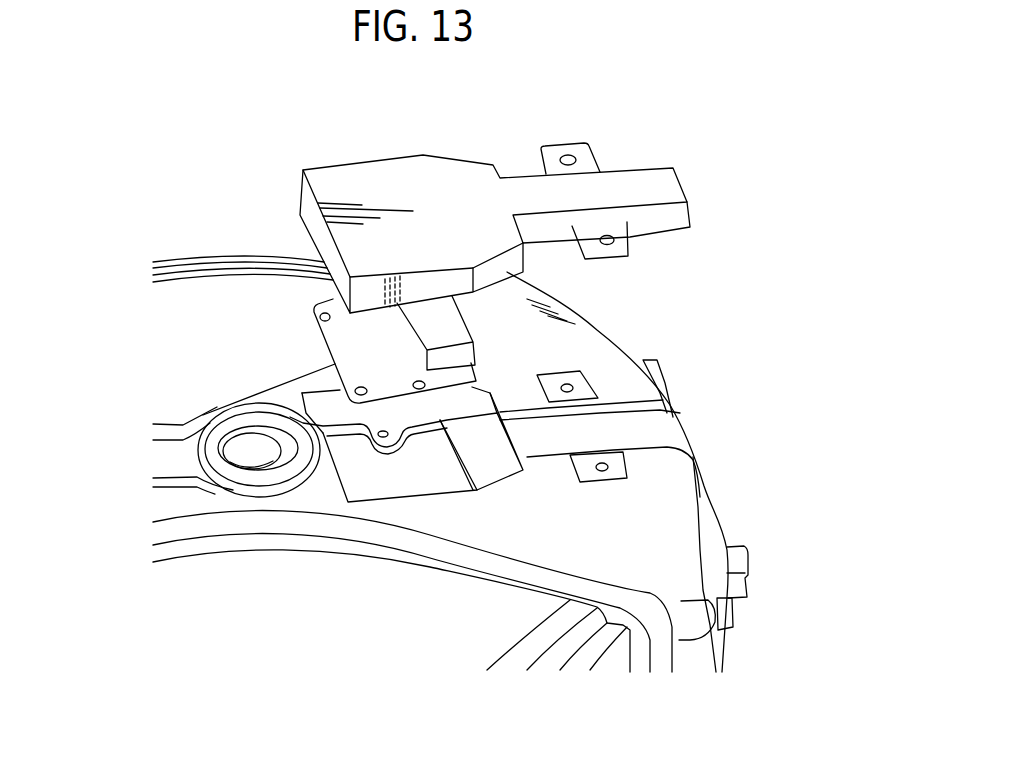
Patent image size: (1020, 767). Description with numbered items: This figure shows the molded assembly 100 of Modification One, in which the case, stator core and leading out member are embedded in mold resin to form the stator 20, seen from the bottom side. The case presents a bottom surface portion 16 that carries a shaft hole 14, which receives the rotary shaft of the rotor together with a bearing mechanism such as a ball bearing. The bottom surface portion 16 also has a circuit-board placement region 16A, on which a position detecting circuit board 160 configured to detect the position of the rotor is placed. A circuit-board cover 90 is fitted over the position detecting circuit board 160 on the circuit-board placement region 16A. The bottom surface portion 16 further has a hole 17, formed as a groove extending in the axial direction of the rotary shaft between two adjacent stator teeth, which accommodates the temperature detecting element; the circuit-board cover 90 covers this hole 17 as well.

The hard disk drive assembly 100 is at (699, 130).
The circuit-board cover 90 is at (386, 178).
The position detecting circuit board 160 is at (357, 331).
The stator 20 is at (202, 320).
The shaft hole 14 is at (203, 422).
The hole 17 is at (524, 444).
The circuit-board placement region 16A is at (376, 484).
The bottom surface portion 16 is at (459, 526).